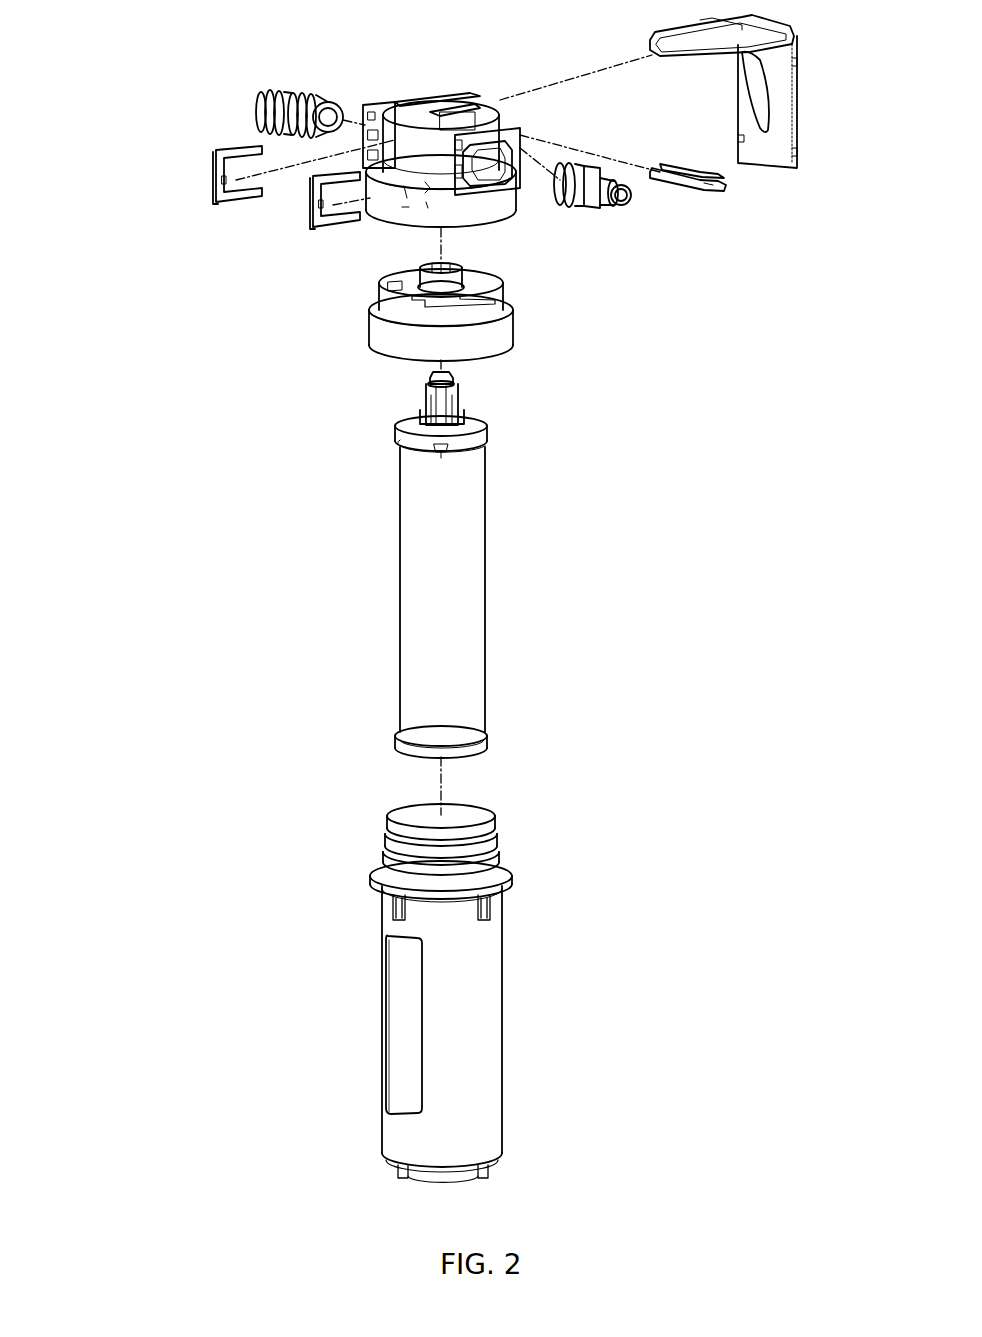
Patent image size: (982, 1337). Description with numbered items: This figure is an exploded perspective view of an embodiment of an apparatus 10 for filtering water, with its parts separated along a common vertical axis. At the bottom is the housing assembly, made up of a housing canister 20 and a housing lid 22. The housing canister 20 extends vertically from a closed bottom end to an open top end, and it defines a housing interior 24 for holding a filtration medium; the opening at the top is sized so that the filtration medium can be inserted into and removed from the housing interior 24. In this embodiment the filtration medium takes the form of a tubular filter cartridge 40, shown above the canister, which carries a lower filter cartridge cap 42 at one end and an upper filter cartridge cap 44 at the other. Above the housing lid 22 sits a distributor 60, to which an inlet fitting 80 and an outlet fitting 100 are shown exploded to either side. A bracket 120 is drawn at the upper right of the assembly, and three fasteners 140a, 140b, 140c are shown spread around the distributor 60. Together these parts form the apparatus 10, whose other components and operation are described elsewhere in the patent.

The apparatus 10 is at (97, 81).
The housing canister 20 is at (487, 1005).
The housing lid 22 is at (381, 342).
The housing interior 24 is at (481, 805).
The filter cartridge 40 is at (474, 571).
The lower filter cartridge cap 42 is at (490, 735).
The upper filter cartridge cap 44 is at (476, 418).
The distributor 60 is at (390, 102).
The inlet fitting 80 is at (254, 101).
The outlet fitting 100 is at (598, 205).
The bracket 120 is at (798, 104).
The fastener 140a is at (215, 205).
The fastener 140b is at (312, 230).
The fastener 140c is at (711, 190).